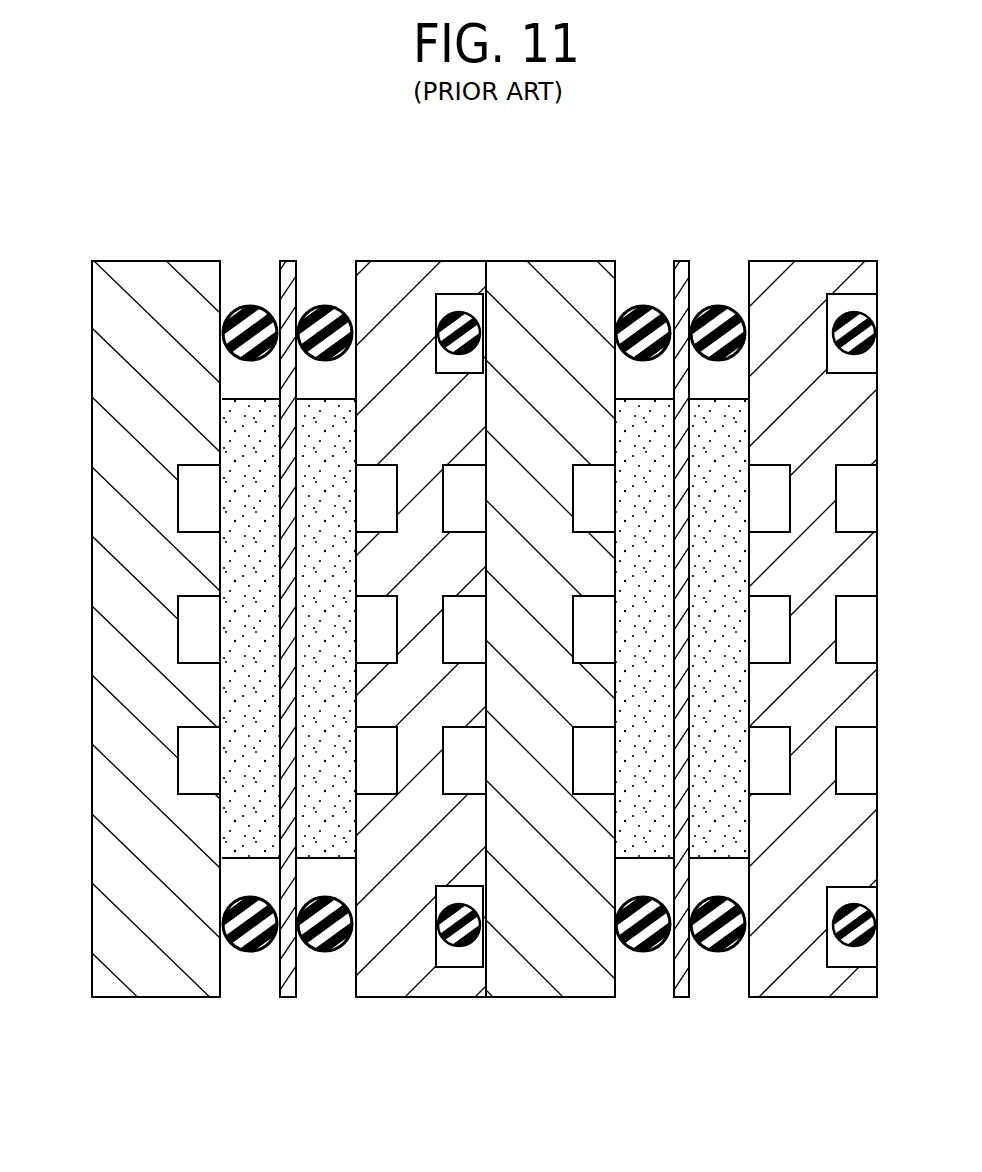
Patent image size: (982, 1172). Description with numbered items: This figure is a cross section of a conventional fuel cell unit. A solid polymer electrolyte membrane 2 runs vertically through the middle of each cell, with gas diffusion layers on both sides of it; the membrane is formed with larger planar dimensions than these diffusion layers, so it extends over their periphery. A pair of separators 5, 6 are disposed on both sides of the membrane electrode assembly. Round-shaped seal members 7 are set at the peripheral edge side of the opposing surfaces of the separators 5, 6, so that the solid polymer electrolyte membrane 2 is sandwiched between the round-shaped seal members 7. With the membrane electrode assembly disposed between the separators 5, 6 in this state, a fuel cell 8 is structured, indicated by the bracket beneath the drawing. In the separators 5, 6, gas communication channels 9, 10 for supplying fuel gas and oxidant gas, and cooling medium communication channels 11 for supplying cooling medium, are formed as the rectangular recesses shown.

The solid polymer electrolyte membrane 2 is at (293, 262).
The separator 5 is at (116, 897).
The separator 6 is at (408, 955).
The round-shaped seal member 7 is at (251, 318).
The fuel cell 8 is at (90, 1084).
The gas communication channel 9 is at (178, 484).
The gas communication channel 10 is at (363, 470).
The cooling medium communication channel 11 is at (458, 470).